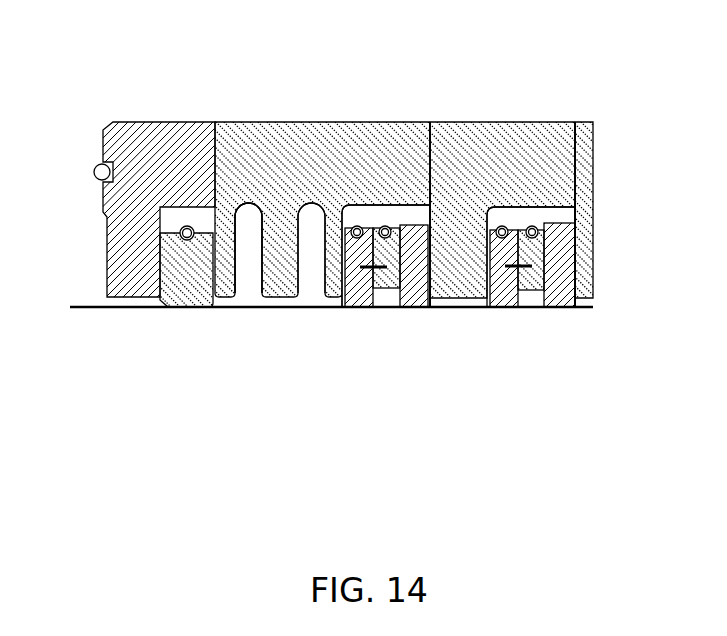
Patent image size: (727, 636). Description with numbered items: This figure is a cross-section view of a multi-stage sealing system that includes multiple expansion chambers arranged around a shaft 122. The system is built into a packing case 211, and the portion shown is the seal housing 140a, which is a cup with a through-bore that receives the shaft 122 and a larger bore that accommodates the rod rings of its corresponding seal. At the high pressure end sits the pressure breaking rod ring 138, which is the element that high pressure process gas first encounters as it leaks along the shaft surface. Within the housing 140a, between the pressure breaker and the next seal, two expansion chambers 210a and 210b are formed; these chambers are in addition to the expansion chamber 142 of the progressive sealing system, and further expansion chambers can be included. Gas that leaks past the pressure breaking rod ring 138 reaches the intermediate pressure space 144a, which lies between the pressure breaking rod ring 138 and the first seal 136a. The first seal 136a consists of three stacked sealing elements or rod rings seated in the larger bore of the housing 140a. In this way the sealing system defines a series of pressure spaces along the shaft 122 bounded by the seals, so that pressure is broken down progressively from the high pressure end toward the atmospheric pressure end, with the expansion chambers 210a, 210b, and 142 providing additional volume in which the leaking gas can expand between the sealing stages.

The packing case 211 is at (127, 100).
The expansion chamber 142 is at (248, 237).
The seal housing 140a is at (358, 130).
The pressure breaking rod ring 138 is at (163, 253).
The shaft 122 is at (88, 307).
The expansion chamber 210a is at (250, 270).
The expansion chamber 210b is at (315, 257).
The intermediate pressure space 144a is at (334, 303).
The first seal 136a is at (415, 282).